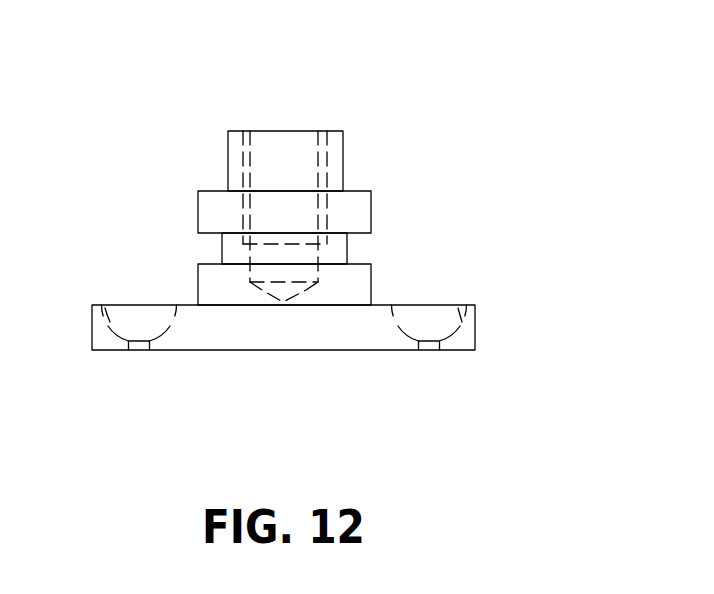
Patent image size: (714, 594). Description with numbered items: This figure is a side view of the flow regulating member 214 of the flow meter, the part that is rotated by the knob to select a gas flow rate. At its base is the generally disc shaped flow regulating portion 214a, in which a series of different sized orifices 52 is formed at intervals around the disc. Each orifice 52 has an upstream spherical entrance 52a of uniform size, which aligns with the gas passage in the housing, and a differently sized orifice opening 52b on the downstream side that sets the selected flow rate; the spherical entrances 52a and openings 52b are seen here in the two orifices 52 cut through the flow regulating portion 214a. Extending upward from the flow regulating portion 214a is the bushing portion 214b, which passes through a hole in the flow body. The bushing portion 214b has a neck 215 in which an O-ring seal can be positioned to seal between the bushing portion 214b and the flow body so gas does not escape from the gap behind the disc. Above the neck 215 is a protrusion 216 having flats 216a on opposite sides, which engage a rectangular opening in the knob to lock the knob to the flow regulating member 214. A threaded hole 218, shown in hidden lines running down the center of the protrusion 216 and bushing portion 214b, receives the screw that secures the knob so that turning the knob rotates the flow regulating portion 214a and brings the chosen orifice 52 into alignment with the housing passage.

The flow regulating member 214 is at (475, 113).
The flow regulating portion 214a is at (375, 352).
The bushing portion 214b is at (363, 203).
The neck 215 is at (348, 248).
The protrusion 216 is at (343, 135).
The flats 216a is at (265, 177).
The threaded hole 218 is at (252, 162).
The orifices 52 is at (148, 303).
The spherical entrances 52a is at (120, 297).
The orifice openings 52b is at (137, 351).